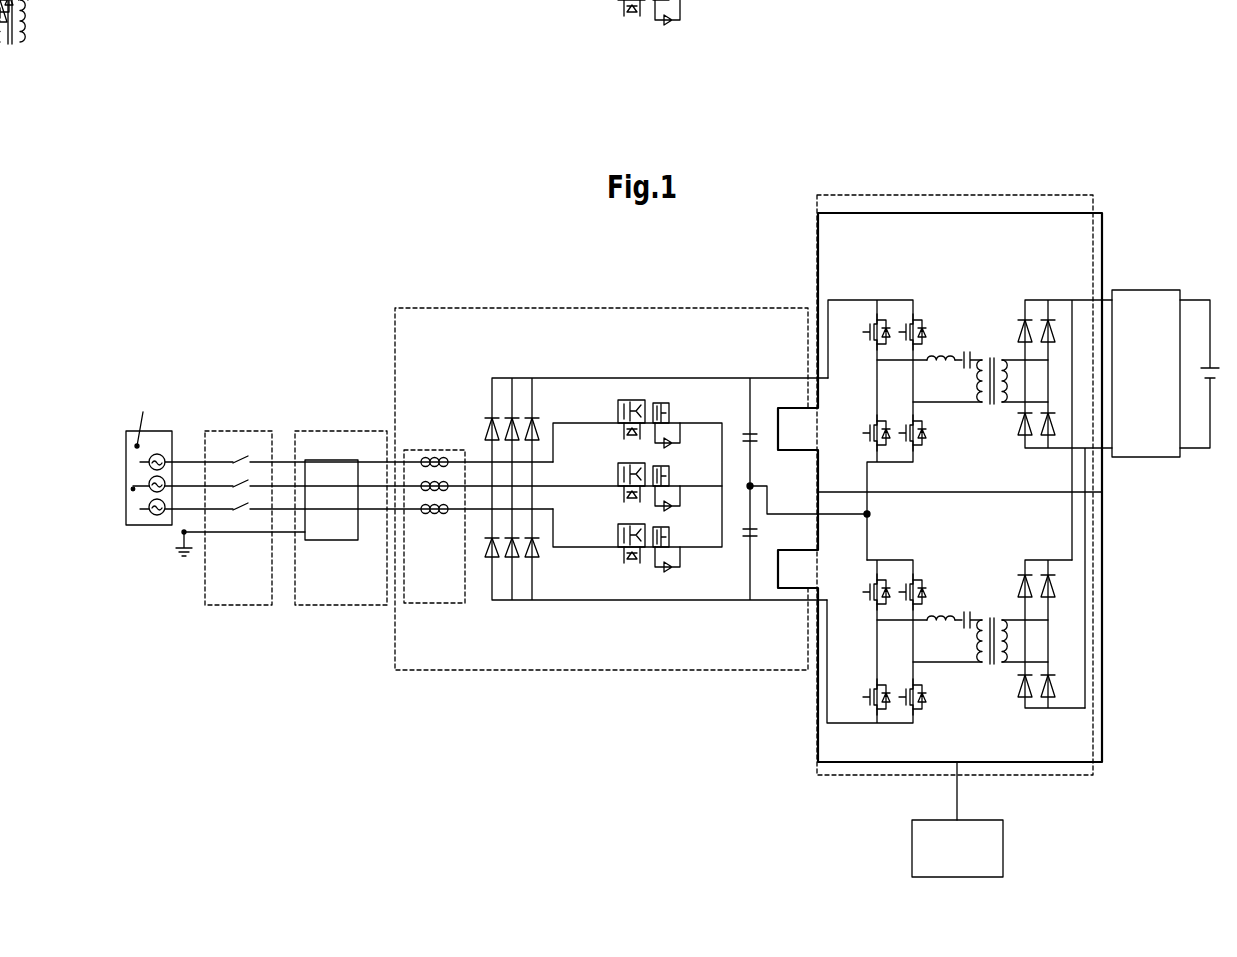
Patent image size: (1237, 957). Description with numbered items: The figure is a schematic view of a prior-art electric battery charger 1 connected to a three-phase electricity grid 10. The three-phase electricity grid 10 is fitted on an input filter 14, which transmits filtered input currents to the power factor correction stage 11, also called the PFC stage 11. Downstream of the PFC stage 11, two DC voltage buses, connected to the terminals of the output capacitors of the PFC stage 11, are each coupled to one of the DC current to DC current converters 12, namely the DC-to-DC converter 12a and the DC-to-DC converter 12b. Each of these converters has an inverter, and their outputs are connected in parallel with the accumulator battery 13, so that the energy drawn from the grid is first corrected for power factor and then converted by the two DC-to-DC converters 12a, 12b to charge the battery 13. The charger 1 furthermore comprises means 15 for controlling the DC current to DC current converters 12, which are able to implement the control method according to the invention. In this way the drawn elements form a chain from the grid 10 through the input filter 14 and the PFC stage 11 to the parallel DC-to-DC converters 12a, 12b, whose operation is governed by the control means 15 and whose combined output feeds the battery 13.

The electric battery charger 1 is at (1124, 119).
The three-phase electricity grid 10 is at (137, 525).
The power factor correction stage 11 is at (478, 320).
The DC current to DC current converters 12 is at (939, 206).
The first DC-to-DC converter 12a is at (1075, 216).
The second DC-to-DC converter 12b is at (1068, 776).
The accumulator battery 13 is at (1135, 288).
The input filter 14 is at (335, 460).
The means for controlling the DC current to DC current converters 15 is at (911, 835).